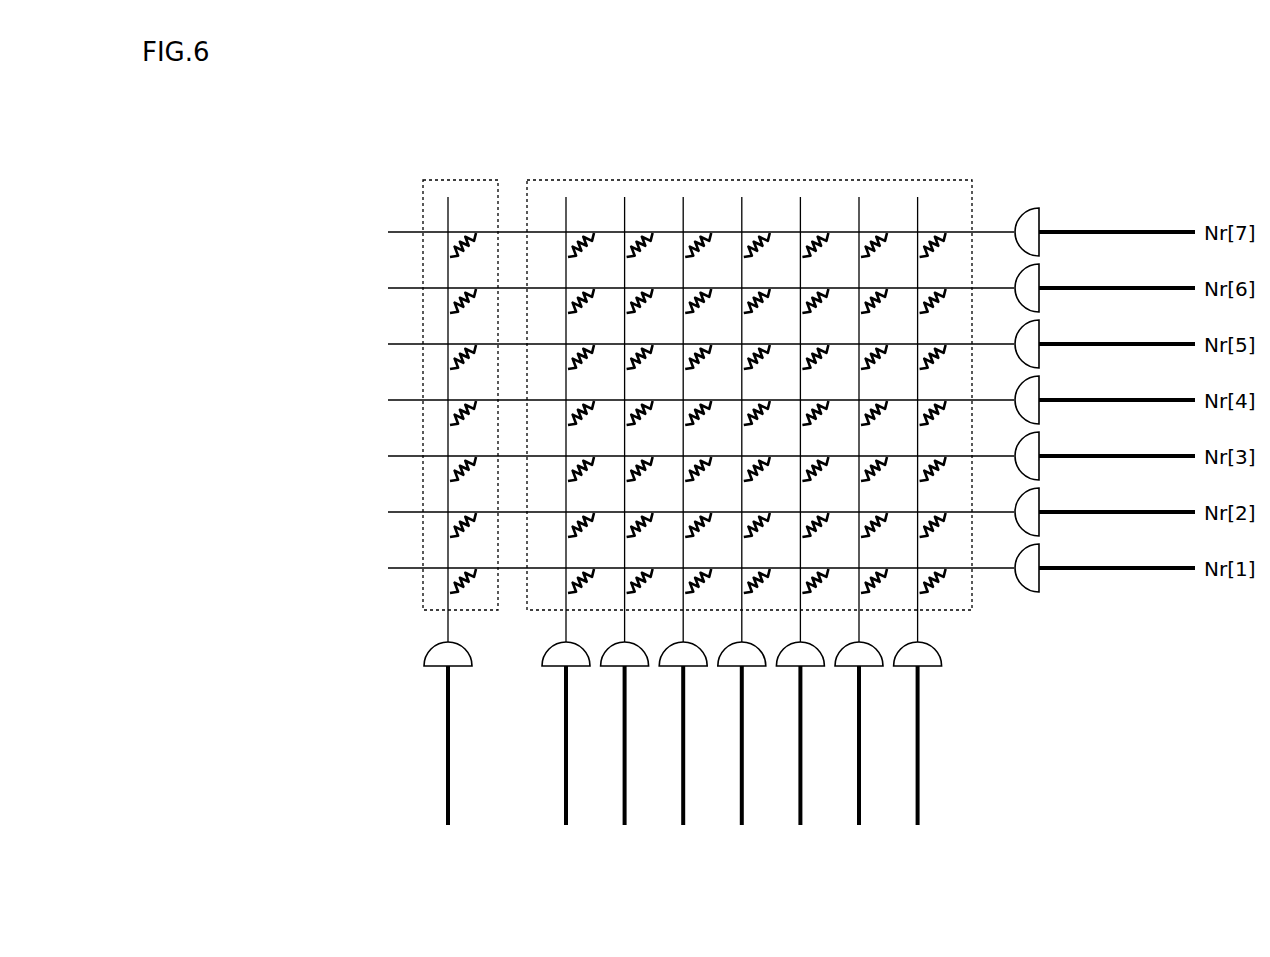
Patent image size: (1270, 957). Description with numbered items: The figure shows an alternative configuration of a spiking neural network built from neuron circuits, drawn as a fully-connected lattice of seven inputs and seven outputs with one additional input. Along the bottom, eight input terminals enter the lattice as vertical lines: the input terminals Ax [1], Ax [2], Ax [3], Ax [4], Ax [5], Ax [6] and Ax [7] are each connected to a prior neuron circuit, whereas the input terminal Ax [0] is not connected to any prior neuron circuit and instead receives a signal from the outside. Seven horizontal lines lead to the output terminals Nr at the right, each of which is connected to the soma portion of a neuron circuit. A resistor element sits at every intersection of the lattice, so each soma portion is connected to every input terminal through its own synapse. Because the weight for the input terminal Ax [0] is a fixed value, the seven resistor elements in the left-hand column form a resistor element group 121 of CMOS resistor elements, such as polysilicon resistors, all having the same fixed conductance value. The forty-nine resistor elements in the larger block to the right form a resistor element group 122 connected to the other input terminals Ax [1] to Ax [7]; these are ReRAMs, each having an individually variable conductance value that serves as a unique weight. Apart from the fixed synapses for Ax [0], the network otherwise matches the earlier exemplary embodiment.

The resistor element group 121 is at (462, 180).
The resistor element group 122 is at (671, 180).
The input terminal Ax [0] 0 is at (448, 762).
The input terminal Ax [1] 1 is at (566, 762).
The input terminal Ax [2] 2 is at (625, 762).
The input terminal Ax [3] 3 is at (683, 762).
The input terminal Ax [4] 4 is at (742, 762).
The input terminal Ax [5] 5 is at (800, 762).
The input terminal Ax [6] 6 is at (859, 762).
The input terminal Ax [7] 7 is at (918, 762).